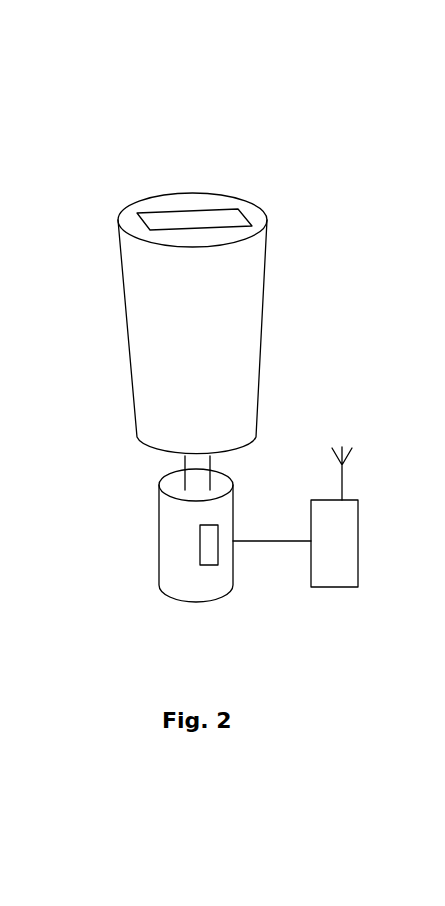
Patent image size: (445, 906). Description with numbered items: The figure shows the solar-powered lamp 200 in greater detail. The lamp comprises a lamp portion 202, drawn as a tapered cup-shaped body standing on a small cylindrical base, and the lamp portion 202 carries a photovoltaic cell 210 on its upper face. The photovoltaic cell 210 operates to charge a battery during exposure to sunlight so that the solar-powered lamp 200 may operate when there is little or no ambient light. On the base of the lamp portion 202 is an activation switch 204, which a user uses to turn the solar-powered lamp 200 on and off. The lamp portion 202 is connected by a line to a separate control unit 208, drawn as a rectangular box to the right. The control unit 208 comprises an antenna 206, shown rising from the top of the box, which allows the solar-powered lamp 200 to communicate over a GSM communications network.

The solar-powered lamp 200 is at (240, 140).
The lamp portion 202 is at (263, 312).
The activation switch 204 is at (208, 552).
The antenna 206 is at (342, 480).
The control unit 208 is at (340, 578).
The photovoltaic cell 210 is at (233, 217).